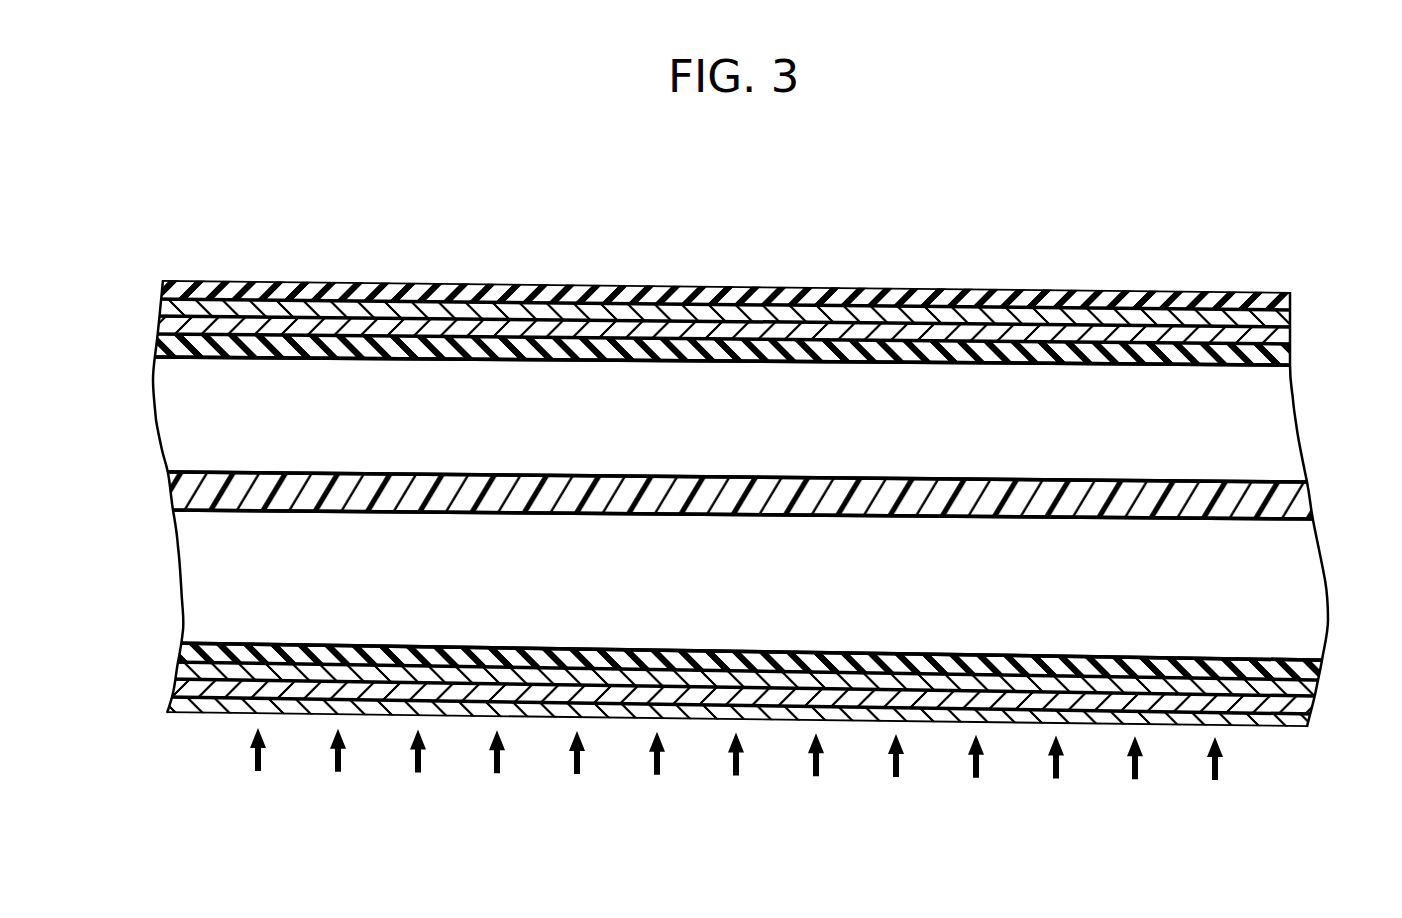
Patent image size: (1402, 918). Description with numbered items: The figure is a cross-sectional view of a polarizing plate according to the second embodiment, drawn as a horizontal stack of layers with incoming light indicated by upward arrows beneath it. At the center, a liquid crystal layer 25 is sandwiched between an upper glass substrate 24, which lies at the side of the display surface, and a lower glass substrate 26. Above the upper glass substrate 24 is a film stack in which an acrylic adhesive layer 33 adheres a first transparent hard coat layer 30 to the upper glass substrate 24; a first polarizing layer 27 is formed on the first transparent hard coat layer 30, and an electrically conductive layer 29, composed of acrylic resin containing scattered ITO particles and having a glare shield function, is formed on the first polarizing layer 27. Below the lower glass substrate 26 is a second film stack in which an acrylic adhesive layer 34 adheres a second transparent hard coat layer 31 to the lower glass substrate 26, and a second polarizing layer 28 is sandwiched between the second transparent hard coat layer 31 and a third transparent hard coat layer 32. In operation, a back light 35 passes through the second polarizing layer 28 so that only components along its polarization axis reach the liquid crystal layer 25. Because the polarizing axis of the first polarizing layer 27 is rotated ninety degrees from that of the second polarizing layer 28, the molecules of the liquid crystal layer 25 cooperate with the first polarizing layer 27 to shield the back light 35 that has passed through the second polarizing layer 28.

The upper glass substrate 24 is at (1275, 425).
The liquid crystal layer 25 is at (1288, 493).
The lower glass substrate 26 is at (1303, 580).
The first polarizing layer 27 is at (170, 307).
The second polarizing layer 28 is at (1307, 705).
The electrically conductive layer 29 is at (1280, 300).
The first transparent hard coat layer 30 is at (1273, 334).
The second transparent hard coat layer 31 is at (193, 672).
The third transparent hard coat layer 32 is at (183, 702).
The acrylic adhesive layer 33 is at (167, 342).
The acrylic adhesive layer 34 is at (1310, 665).
The back light 35 is at (1225, 763).